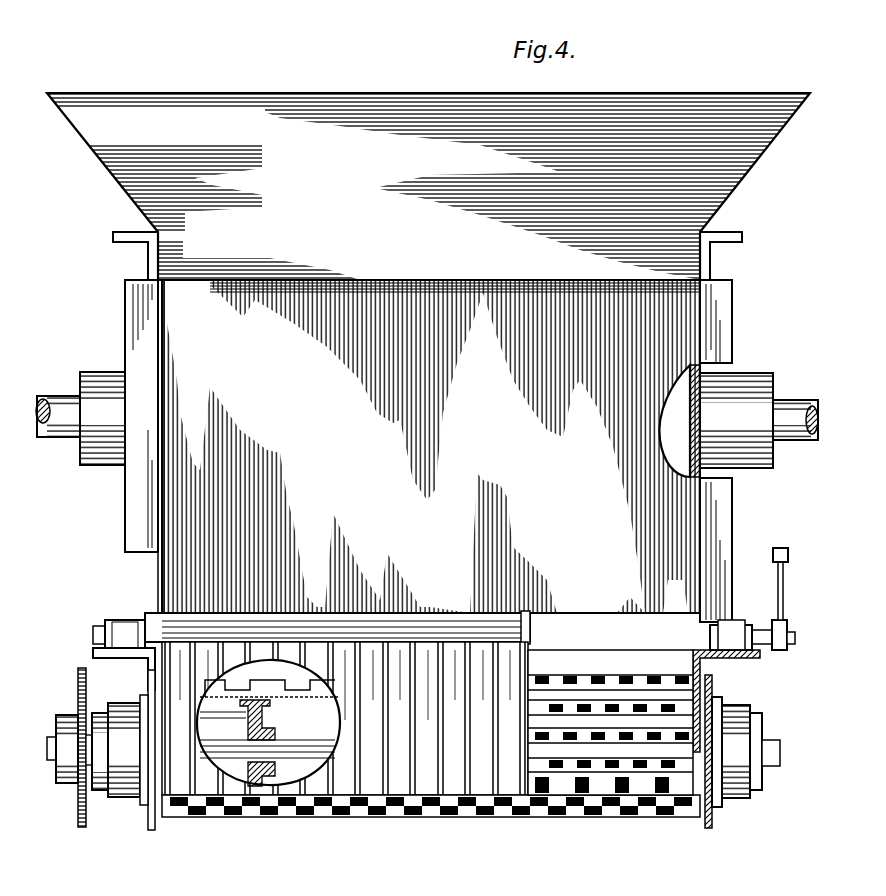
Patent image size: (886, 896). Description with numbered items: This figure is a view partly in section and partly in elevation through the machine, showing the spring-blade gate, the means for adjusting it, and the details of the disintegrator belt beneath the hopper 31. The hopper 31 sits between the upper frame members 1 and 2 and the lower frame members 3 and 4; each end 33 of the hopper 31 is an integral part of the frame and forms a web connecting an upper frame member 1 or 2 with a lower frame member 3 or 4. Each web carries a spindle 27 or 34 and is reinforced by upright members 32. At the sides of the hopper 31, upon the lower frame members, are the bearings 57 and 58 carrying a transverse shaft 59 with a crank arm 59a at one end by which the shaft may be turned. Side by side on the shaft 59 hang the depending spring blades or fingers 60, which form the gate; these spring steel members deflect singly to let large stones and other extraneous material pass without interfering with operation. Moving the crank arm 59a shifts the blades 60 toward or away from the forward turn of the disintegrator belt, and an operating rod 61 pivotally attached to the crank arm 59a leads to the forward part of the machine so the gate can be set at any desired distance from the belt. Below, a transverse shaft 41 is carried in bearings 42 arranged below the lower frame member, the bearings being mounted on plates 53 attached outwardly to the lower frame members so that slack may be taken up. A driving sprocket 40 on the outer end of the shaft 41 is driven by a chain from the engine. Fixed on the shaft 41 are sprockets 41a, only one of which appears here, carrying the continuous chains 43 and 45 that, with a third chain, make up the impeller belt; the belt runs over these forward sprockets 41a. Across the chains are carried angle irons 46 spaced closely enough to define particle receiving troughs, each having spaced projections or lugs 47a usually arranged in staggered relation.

The upper frame member 1 is at (729, 236).
The upper frame member 2 is at (118, 236).
The lower frame member 3 is at (753, 660).
The lower frame member 4 is at (126, 654).
The spindle 27 is at (795, 433).
The hopper 31 is at (438, 98).
The upright member 32 is at (125, 324).
The hopper end 33 is at (690, 449).
The spindle 34 is at (62, 437).
The driving sprocket 40 is at (76, 689).
The transverse shaft 41 is at (52, 762).
The sprocket 41a is at (247, 735).
The bearing 42 is at (130, 785).
The chain 43 is at (263, 712).
The chain 45 is at (262, 690).
The angle iron 46 is at (610, 722).
The lug 47a is at (226, 686).
The plate 53 is at (154, 830).
The bearing 57 is at (731, 624).
The bearing 58 is at (118, 619).
The transverse shaft 59 is at (532, 636).
The crank arm 59a is at (783, 580).
The spring blade 60 is at (410, 668).
The operating rod 61 is at (789, 555).